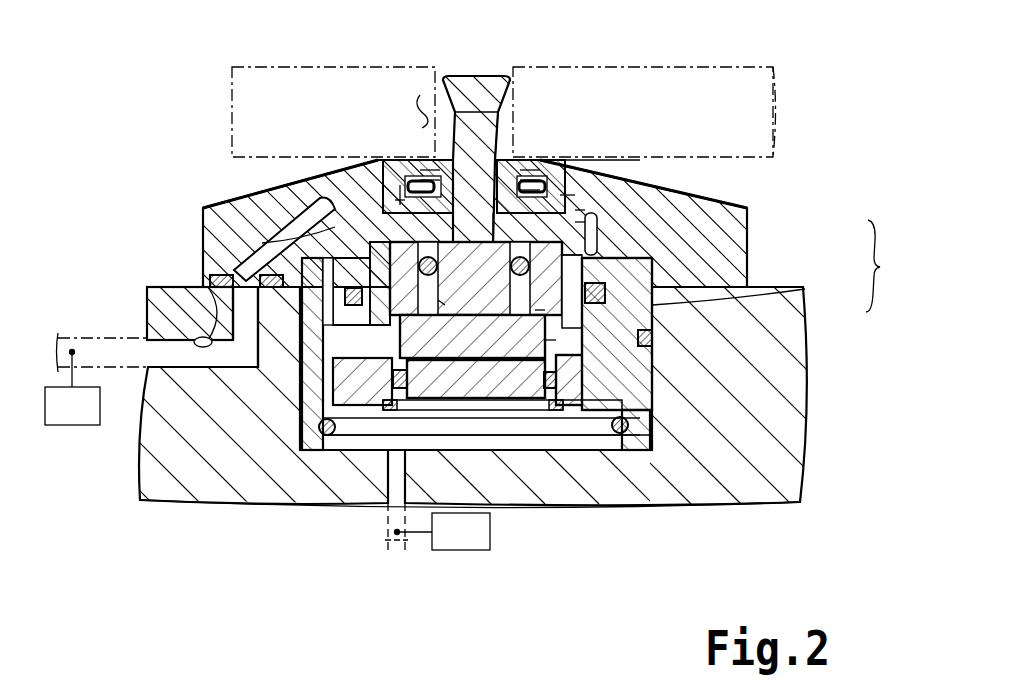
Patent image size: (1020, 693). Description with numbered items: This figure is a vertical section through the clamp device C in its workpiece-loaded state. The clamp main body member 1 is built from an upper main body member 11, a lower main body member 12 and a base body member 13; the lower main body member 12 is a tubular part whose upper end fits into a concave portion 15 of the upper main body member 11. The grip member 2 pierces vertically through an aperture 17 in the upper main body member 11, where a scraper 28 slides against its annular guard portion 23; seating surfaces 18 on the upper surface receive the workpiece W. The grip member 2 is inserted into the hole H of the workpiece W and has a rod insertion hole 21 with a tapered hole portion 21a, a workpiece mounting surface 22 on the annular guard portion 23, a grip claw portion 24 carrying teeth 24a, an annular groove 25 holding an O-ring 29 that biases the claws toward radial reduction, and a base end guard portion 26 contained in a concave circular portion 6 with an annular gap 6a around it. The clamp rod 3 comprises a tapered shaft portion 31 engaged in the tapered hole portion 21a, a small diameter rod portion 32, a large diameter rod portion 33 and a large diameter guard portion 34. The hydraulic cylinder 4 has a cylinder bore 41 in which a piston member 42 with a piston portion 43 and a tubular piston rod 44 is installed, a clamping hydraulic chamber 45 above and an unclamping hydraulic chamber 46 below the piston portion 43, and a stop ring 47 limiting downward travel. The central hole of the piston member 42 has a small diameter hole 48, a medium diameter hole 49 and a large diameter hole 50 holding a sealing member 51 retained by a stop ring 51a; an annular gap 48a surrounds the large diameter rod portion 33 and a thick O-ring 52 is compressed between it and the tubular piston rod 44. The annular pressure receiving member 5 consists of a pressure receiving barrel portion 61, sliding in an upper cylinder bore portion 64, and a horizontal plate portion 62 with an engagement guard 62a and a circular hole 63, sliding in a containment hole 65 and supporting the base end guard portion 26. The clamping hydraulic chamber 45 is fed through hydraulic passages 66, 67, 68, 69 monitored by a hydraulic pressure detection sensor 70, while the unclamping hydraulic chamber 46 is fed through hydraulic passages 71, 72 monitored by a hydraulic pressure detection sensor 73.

The clamp main body member 1 is at (881, 266).
The grip member 2 is at (508, 112).
The clamp rod 3 is at (487, 70).
The hydraulic cylinder 4 is at (388, 498).
The annular pressure receiving member 5 is at (643, 157).
The concave circular portion 6 is at (575, 222).
The annular gap 6a is at (395, 200).
The upper main body member 11 is at (747, 236).
The lower main body member 12 is at (760, 285).
The base body member 13 is at (808, 312).
The concave portion 15 is at (660, 255).
The aperture 17 is at (575, 210).
The seating surfaces 18 is at (560, 195).
The rod insertion hole 21 is at (520, 180).
The tapered hole portion 21a is at (512, 100).
The workpiece mounting surface 22 is at (420, 170).
The annular guard portion 23 is at (522, 190).
The grip claw portion 24 is at (520, 170).
The teeth 24a is at (430, 167).
The annular groove 25 is at (476, 225).
The base end guard portion 26 is at (400, 190).
The scraper 28 is at (427, 190).
The O-ring 29 is at (423, 180).
The tapered shaft portion 31 is at (472, 90).
The small diameter rod portion 32 is at (488, 193).
The large diameter rod portion 33 is at (487, 288).
The large diameter guard portion 34 is at (487, 348).
The cylinder bore 41 is at (620, 402).
The piston member 42 is at (570, 422).
The piston portion 43 is at (600, 383).
The tubular piston rod 44 is at (598, 290).
The clamping hydraulic chamber 45 is at (345, 443).
The unclamping hydraulic chamber 46 is at (487, 443).
The stop ring 47 is at (617, 420).
The small diameter hole 48 is at (535, 310).
The annular gap 48a is at (458, 309).
The medium diameter hole 49 is at (548, 345).
The large diameter hole 50 is at (552, 366).
The sealing member 51 is at (487, 389).
The stop ring 51a is at (590, 403).
The O-ring 52 is at (438, 262).
The pressure receiving barrel portion 61 is at (605, 258).
The horizontal plate portion 62 is at (325, 205).
The engagement guard 62a is at (592, 228).
The circular hole 63 is at (645, 183).
The upper cylinder bore portion 64 is at (318, 300).
The containment hole 65 is at (385, 163).
The hydraulic passage 66 is at (320, 235).
The hydraulic passage 67 is at (223, 235).
The hydraulic passage 68 is at (213, 335).
The hydraulic passage 69 is at (97, 335).
The hydraulic pressure detection sensor 70 is at (72, 428).
The hydraulic passage 71 is at (397, 477).
The hydraulic passage 72 is at (385, 542).
The hydraulic pressure detection sensor 73 is at (460, 552).
The clamp device C is at (715, 53).
The workpiece W is at (752, 97).
The hole H is at (453, 67).